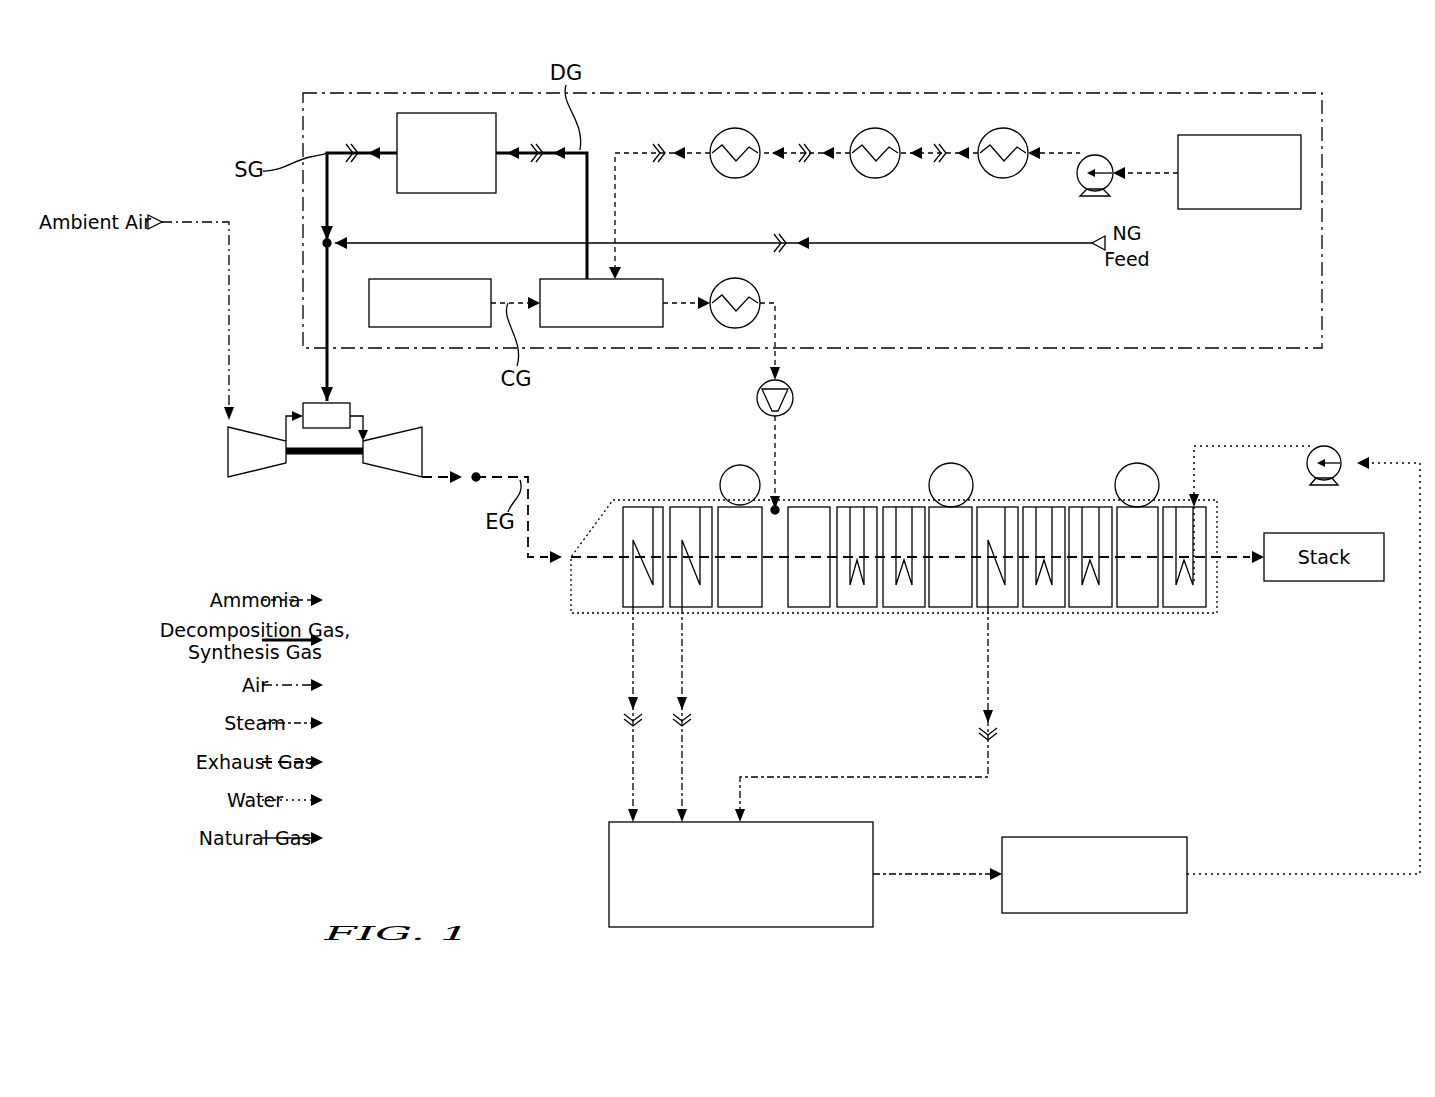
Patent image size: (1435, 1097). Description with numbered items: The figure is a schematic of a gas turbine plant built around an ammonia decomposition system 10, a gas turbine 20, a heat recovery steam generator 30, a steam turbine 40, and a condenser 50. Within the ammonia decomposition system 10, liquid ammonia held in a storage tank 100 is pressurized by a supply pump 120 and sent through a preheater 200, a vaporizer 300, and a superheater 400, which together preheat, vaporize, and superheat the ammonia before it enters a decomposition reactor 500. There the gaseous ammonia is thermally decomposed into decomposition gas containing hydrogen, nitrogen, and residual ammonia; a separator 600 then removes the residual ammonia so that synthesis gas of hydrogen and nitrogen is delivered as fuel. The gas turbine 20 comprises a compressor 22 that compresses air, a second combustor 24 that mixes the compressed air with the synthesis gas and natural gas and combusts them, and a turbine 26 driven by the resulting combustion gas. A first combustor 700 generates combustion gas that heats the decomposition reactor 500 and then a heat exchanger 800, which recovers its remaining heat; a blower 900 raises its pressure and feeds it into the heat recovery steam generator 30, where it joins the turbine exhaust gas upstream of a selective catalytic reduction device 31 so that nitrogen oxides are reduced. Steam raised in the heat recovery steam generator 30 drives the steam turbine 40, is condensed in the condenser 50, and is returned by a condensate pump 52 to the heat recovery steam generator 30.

The ammonia decomposition system 10 is at (1348, 142).
The gas turbine 20 is at (325, 485).
The compressor 22 is at (258, 458).
The second combustor 24 is at (321, 420).
The turbine 26 is at (388, 458).
The heat recovery steam generator 30 is at (894, 592).
The selective catalytic reduction device 31 is at (808, 507).
The steam turbine 40 is at (609, 872).
The condenser 50 is at (1095, 837).
The condensate pump 52 is at (1322, 446).
The storage tank 100 is at (1237, 135).
The supply pump 120 is at (1096, 156).
The preheater 200 is at (1003, 128).
The vaporizer 300 is at (873, 128).
The superheater 400 is at (735, 128).
The decomposition reactor 500 is at (600, 327).
The separator 600 is at (443, 113).
The first combustor 700 is at (432, 327).
The heat exchanger 800 is at (760, 300).
The blower 900 is at (793, 398).